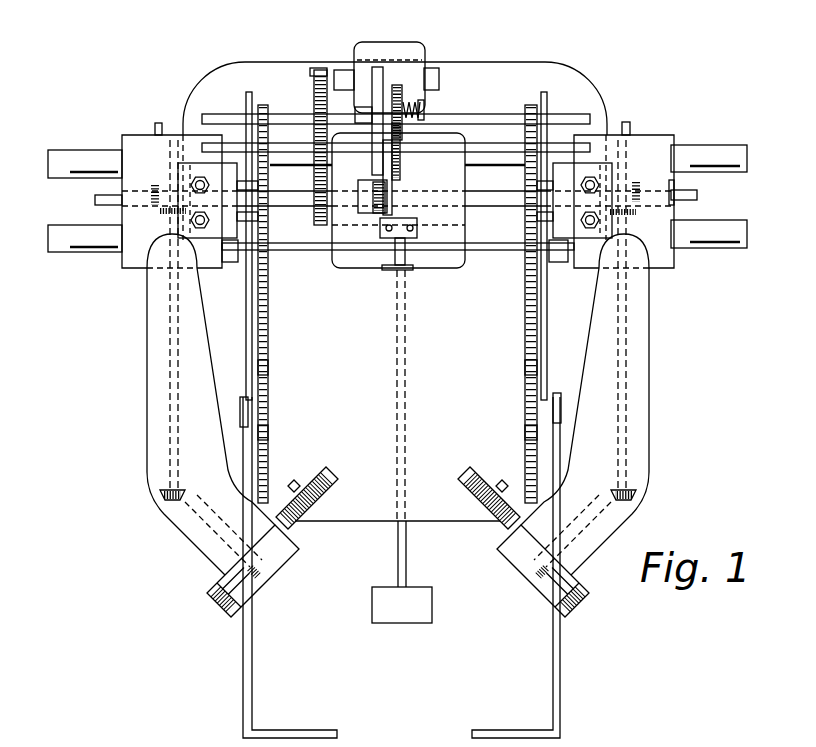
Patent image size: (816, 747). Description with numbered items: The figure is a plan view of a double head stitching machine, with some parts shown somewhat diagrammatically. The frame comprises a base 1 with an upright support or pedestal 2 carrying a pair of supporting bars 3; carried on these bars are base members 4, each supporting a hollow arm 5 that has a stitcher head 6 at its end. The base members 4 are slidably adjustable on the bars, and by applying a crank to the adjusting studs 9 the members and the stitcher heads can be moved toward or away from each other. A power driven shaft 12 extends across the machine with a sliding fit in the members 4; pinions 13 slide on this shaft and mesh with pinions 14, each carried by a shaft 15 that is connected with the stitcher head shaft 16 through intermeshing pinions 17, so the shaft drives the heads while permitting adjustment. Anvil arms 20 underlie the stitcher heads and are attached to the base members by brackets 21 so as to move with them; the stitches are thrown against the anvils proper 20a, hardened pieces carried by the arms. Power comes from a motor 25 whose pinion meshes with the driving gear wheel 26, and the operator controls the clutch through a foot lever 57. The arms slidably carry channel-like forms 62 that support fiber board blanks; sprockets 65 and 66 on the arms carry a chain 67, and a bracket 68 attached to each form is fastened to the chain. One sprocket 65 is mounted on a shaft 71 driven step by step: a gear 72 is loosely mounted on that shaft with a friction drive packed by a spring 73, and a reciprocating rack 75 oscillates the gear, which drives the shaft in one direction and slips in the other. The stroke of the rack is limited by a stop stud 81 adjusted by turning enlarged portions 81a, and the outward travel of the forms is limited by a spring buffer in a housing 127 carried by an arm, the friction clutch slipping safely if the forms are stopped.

The base 1 is at (365, 508).
The upright support or pedestal 2 is at (364, 262).
The supporting bars 3 is at (722, 146).
The base members 4 is at (132, 140).
The hollow arms 5 is at (150, 397).
The stitcher heads 6 is at (278, 573).
The adjusting studs 9 is at (158, 123).
The power driven shaft 12 is at (293, 251).
The pinions 13 is at (160, 183).
The pinions 14 is at (163, 218).
The shaft 15 is at (165, 300).
The stitcher head shaft 16 is at (196, 545).
The intermeshing pinions 17 is at (160, 500).
The anvil arms 20 is at (270, 332).
The anvils proper 20a is at (270, 588).
The brackets 21 is at (233, 262).
The motor 25 is at (384, 48).
The driving gear wheel 26 is at (317, 110).
The foot lever 57 is at (412, 618).
The forms 62 is at (252, 672).
The sprockets 65 is at (247, 92).
The sprockets 66 is at (268, 479).
The chain 67 is at (270, 367).
The bracket 68 is at (270, 407).
The shaft 71 is at (472, 117).
The gear 72 is at (410, 102).
The spring 73 is at (439, 78).
The rack 75 is at (399, 83).
The stop stud 81 is at (397, 240).
The enlarged portions 81a is at (411, 269).
The housing 127 is at (270, 435).